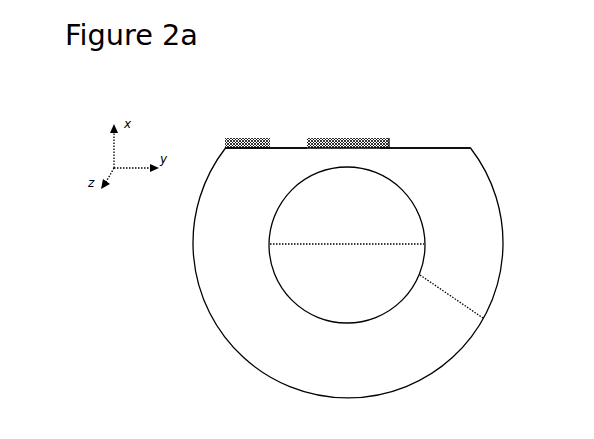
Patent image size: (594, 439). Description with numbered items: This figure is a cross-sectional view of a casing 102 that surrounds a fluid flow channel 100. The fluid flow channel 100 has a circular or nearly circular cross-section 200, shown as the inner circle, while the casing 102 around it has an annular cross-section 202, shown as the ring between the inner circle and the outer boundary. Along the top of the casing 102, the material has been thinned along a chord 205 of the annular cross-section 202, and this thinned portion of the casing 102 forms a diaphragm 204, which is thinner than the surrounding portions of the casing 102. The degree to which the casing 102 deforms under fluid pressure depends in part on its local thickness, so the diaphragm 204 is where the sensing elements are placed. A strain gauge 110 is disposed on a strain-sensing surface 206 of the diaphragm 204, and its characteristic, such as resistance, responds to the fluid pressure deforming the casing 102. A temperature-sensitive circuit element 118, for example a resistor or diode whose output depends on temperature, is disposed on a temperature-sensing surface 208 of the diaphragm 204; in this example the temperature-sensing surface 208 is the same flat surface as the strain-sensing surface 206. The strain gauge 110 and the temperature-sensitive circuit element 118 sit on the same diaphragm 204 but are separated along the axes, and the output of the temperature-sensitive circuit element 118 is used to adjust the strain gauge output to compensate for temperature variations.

The fluid flow channel 100 is at (305, 193).
The casing 102 is at (485, 218).
The strain gauge 110 is at (346, 139).
The temperature-sensitive circuit element 118 is at (229, 139).
The circular cross-section 200 is at (333, 244).
The annular cross-section 202 is at (450, 296).
The diaphragm 204 is at (382, 160).
The chord 205 is at (435, 145).
The strain-sensing surface 206 is at (382, 140).
The temperature-sensing surface 208 is at (247, 148).